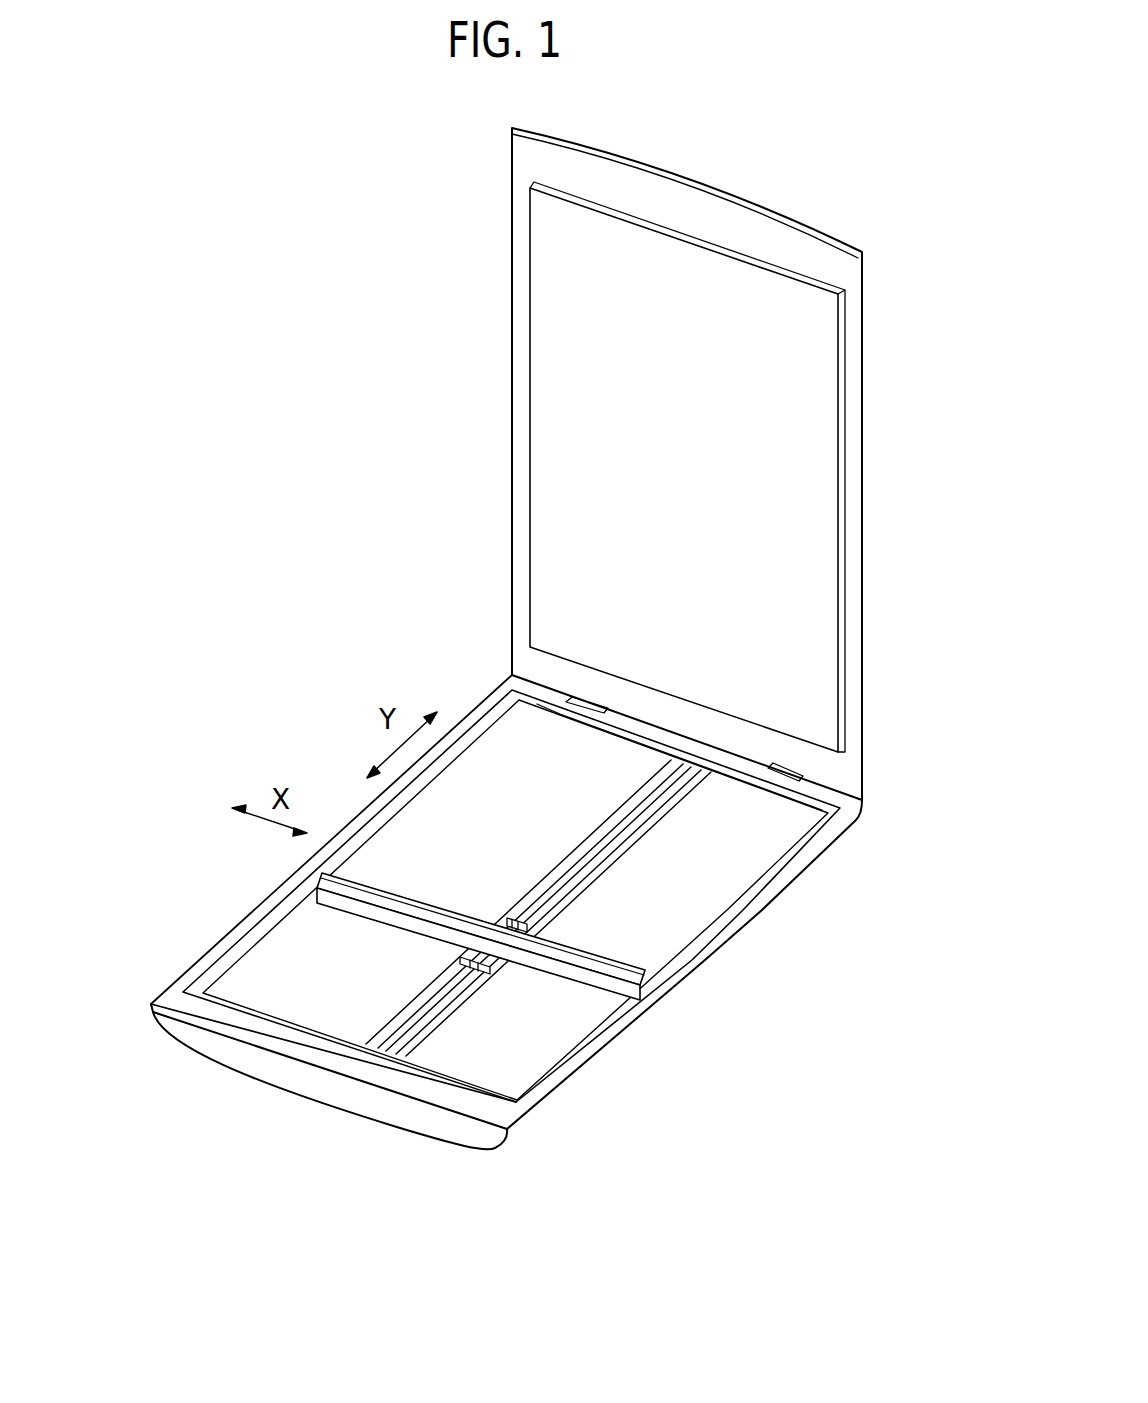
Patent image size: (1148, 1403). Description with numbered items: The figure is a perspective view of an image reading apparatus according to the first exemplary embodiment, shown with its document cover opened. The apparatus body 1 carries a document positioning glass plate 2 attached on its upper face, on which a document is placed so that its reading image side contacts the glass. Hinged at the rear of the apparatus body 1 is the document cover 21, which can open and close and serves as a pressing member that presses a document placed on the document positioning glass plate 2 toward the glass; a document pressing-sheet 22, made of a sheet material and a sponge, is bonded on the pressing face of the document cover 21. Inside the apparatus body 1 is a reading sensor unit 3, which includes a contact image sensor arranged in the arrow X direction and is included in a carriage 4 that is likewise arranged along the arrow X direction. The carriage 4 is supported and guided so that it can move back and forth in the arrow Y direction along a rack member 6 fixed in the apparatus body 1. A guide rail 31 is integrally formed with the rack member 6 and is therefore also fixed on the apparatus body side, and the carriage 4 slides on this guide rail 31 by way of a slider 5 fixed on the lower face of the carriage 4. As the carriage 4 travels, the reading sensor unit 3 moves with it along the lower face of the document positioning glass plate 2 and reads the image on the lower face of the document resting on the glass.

The apparatus body 1 is at (325, 1090).
The document positioning glass plate 2 is at (700, 900).
The reading sensor unit 3 is at (630, 998).
The guide rail 31 is at (548, 866).
The carriage 4 is at (587, 985).
The slider 5 is at (483, 968).
The rack member 6 is at (407, 1003).
The document cover 21 is at (525, 163).
The document pressing-sheet 22 is at (552, 307).